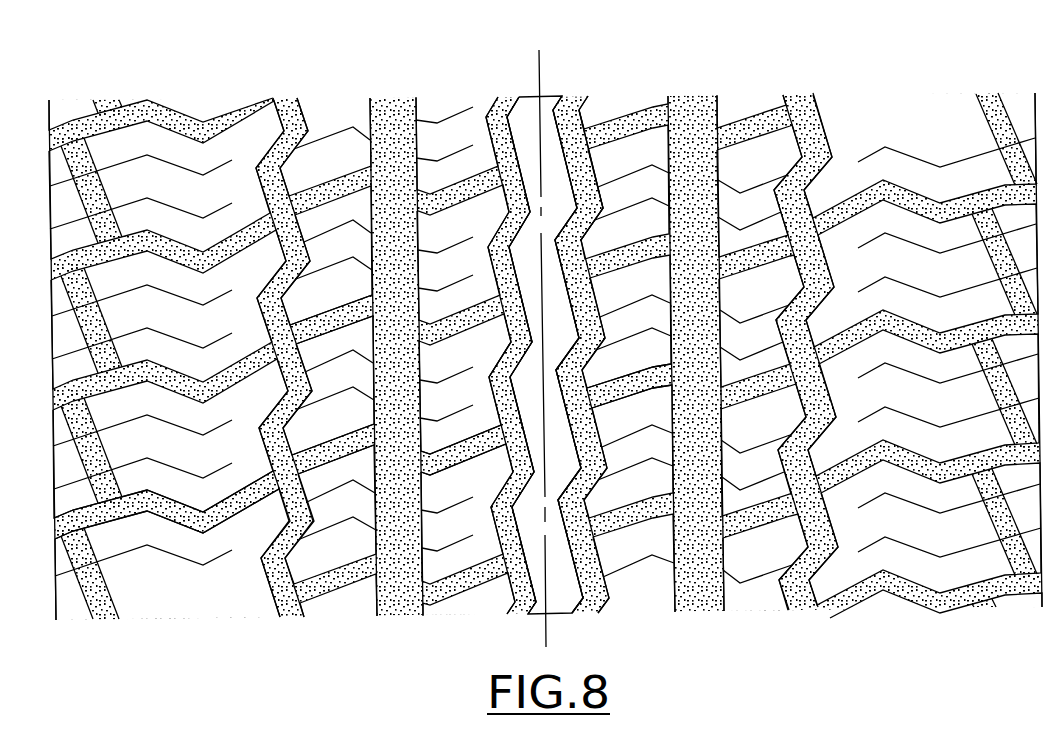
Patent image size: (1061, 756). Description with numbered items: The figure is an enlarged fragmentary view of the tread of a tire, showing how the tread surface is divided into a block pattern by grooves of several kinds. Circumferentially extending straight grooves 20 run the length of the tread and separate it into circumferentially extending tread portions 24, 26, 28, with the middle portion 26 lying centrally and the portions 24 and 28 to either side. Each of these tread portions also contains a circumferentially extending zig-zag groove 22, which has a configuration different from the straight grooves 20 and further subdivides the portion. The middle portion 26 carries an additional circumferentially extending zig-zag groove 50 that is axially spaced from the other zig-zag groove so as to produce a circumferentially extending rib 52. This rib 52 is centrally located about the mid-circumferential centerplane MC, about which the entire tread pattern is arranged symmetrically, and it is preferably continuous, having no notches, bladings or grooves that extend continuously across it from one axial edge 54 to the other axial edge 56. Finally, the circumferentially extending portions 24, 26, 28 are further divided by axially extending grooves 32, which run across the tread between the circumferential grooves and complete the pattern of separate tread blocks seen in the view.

The straight groove 20 is at (400, 610).
The zig-zag groove 22 is at (290, 608).
The circumferentially extending portion 24 is at (255, 78).
The middle portion 26 is at (552, 87).
The circumferentially extending portion 28 is at (790, 66).
The axially extending groove 32 is at (372, 297).
The additional circumferentially extending zig-zag groove 50 is at (520, 610).
The circumferentially extending rib 52 is at (528, 108).
The axial edge 54 is at (598, 300).
The axial edge 56 is at (503, 337).
The mid-circumferential centerplane MC is at (541, 58).